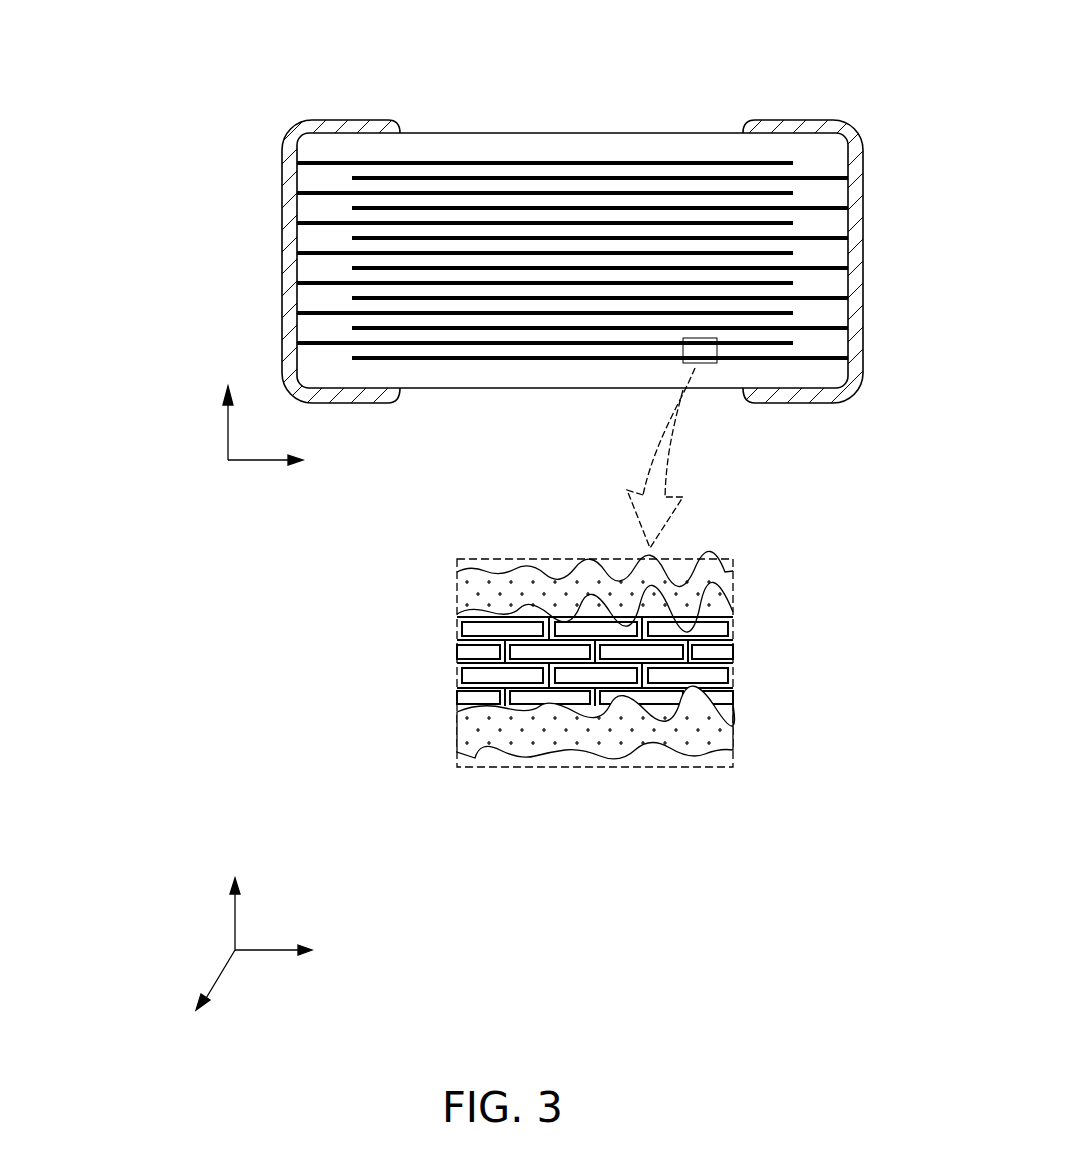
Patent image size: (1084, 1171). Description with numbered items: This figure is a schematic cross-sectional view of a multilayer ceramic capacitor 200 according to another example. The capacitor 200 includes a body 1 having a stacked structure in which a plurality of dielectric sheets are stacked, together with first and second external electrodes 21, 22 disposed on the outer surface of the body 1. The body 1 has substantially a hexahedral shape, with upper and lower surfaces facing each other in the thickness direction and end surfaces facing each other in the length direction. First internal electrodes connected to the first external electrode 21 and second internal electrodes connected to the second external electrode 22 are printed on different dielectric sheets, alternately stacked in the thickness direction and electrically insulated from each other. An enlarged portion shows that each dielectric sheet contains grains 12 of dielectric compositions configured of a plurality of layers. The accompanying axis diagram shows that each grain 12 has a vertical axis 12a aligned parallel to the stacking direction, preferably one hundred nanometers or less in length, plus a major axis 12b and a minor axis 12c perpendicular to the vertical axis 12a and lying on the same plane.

The multilayer ceramic capacitor 200 is at (599, 32).
The body 1 is at (536, 124).
The grains 12 is at (735, 668).
The first external electrode 21 is at (338, 126).
The second external electrode 22 is at (783, 123).
The vertical axis 12a is at (242, 862).
The major axis 12b is at (426, 950).
The minor axis 12c is at (211, 1034).